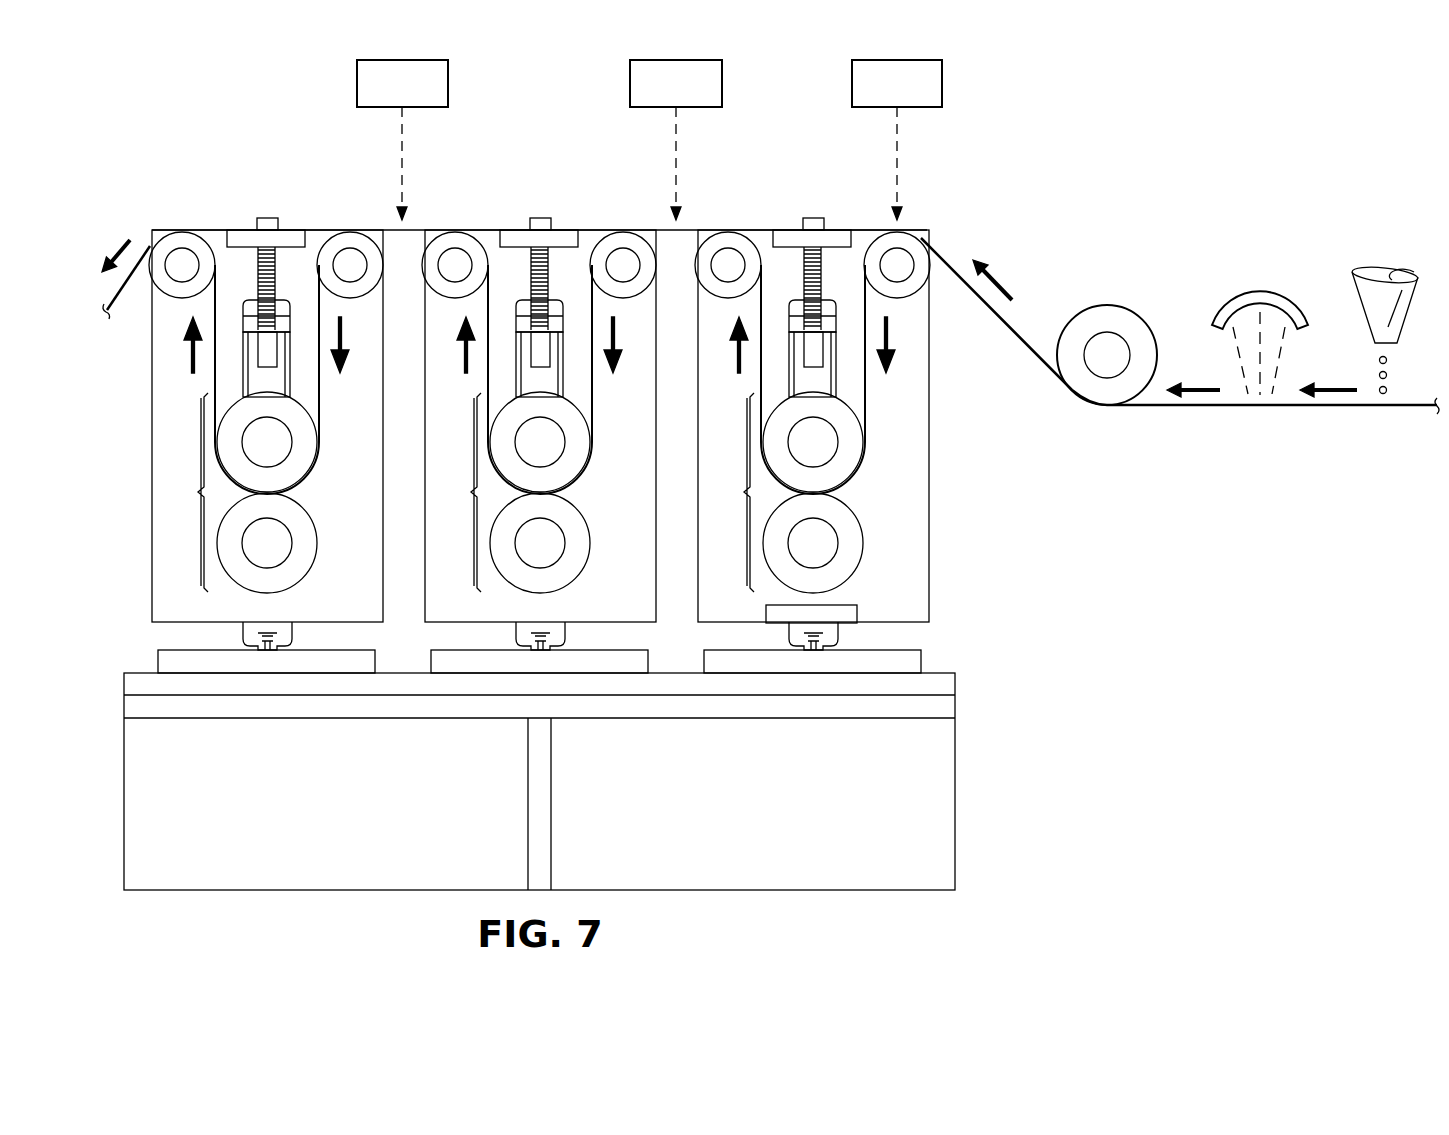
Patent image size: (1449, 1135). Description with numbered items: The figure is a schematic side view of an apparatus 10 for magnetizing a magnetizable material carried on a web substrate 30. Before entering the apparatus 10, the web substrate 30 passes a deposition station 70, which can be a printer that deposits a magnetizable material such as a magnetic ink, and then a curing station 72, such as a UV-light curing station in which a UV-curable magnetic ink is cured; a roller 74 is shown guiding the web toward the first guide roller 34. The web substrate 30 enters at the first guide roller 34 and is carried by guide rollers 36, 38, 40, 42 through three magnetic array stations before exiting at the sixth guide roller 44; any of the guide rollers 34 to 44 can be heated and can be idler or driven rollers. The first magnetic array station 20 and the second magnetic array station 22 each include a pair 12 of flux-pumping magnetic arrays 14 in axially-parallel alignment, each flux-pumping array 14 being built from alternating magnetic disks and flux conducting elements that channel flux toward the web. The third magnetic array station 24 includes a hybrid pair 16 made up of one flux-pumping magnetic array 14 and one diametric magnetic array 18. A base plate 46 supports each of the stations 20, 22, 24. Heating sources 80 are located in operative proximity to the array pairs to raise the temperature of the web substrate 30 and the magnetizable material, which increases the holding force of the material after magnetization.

The apparatus 10 is at (504, 88).
The pair of flux-pumping magnetic arrays 12 is at (652, 493).
The flux-pumping magnetic array 14 is at (303, 557).
The hybrid pair of magnetic arrays 16 is at (242, 493).
The diametric magnetic array 18 is at (303, 455).
The first magnetic array station 20 is at (818, 186).
The second magnetic array station 22 is at (545, 186).
The third magnetic array station 24 is at (262, 186).
The web substrate 30 is at (1020, 323).
The first guide roller 34 is at (905, 236).
The guide roller 36 is at (727, 233).
The guide roller 38 is at (624, 233).
The guide roller 40 is at (455, 233).
The guide roller 42 is at (350, 233).
The sixth guide roller 44 is at (181, 233).
The base plate 46 is at (948, 685).
The deposition station 70 is at (1400, 269).
The curing station 72 is at (1280, 293).
The feed roller 74 is at (1108, 318).
The heating source 80 is at (357, 83).